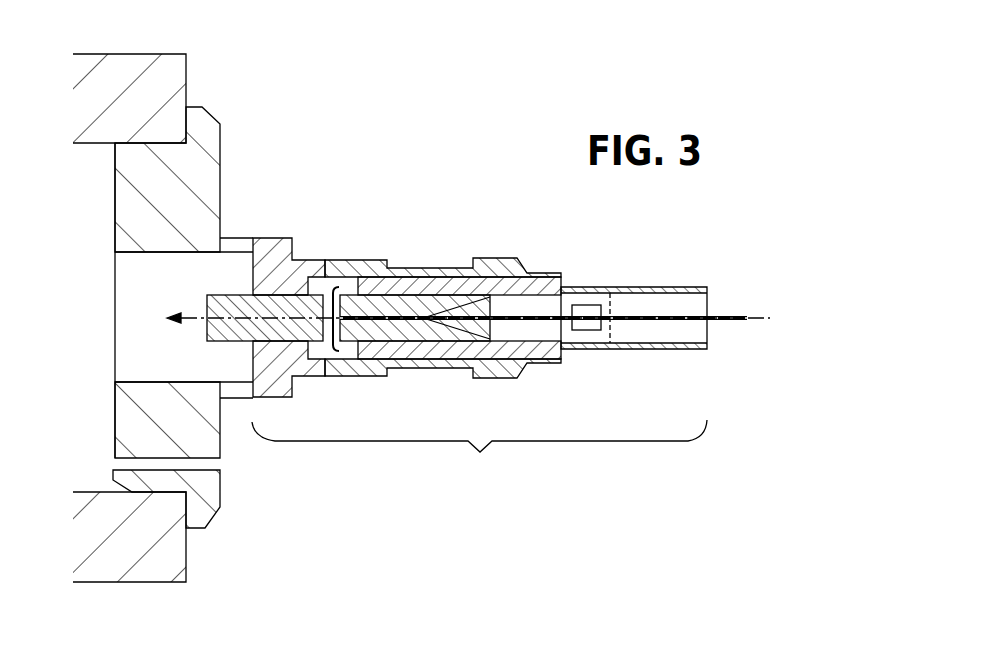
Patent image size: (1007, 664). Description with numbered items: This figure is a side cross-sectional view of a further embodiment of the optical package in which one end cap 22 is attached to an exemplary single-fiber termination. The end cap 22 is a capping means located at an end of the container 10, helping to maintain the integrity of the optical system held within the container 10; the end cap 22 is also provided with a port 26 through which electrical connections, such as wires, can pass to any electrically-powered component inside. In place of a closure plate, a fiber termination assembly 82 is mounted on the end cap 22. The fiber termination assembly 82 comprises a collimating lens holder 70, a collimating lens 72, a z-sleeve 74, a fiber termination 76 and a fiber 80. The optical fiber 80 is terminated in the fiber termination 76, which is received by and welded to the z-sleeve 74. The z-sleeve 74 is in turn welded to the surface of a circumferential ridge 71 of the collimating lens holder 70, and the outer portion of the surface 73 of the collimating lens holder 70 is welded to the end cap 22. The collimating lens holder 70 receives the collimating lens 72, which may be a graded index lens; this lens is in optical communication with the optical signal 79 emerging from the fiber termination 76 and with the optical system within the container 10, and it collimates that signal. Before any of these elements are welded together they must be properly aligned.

The container 10 is at (137, 53).
The end cap 22 is at (220, 153).
The port 26 is at (212, 467).
The collimating lens holder 70 is at (282, 237).
The circumferential ridge 71 is at (328, 268).
The collimating lens 72 is at (237, 300).
The surface 73 is at (242, 360).
The z-sleeve 74 is at (372, 377).
The fiber termination 76 is at (333, 351).
The optical signal 79 is at (203, 316).
The fiber 80 is at (667, 312).
The fiber termination assembly 82 is at (479, 453).